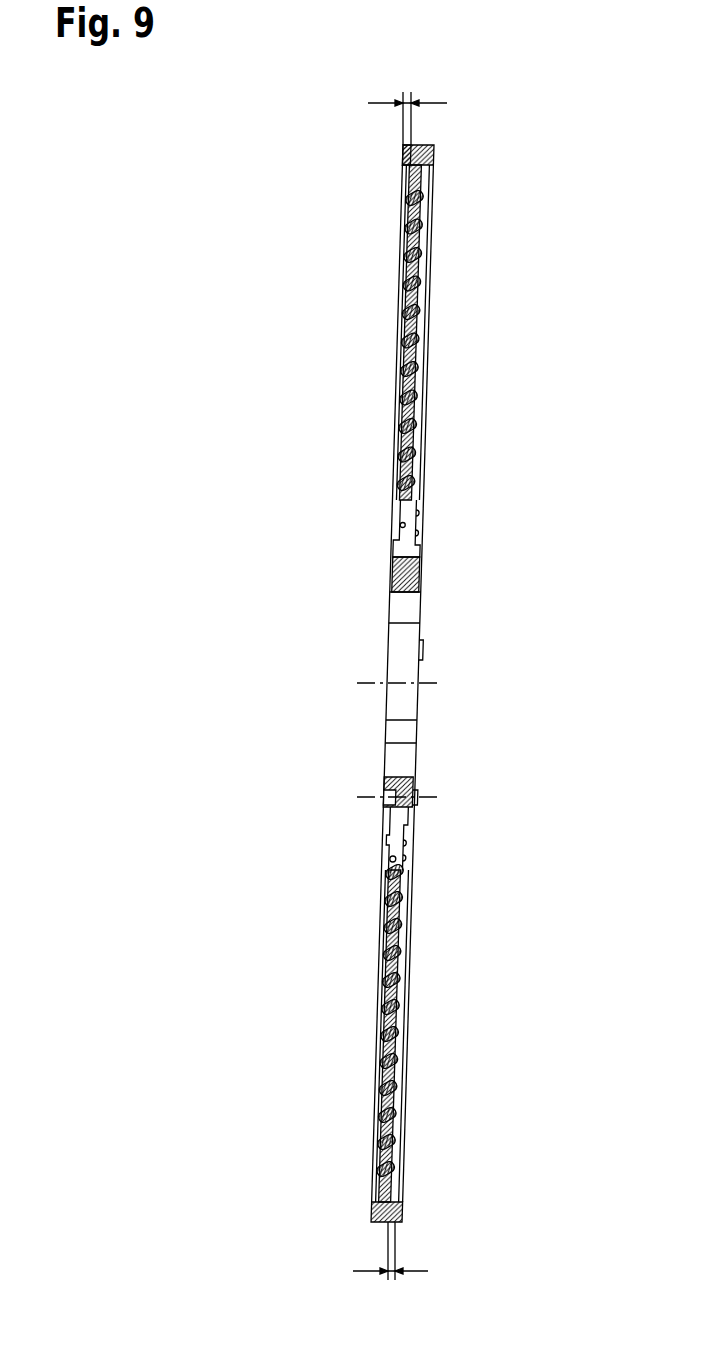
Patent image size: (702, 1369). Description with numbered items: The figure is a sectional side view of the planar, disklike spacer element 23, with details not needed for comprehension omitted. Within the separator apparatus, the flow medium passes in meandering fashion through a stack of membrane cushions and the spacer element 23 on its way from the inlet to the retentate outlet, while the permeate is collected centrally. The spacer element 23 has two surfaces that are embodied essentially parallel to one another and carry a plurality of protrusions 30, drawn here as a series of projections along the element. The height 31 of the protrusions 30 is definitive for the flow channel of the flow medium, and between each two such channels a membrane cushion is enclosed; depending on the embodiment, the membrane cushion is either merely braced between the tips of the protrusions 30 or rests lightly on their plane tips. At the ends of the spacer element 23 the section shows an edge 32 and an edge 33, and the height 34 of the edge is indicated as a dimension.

The spacer element 23 is at (452, 433).
The protrusion 30 is at (400, 251).
The height of protrusion 31 is at (388, 1280).
The edge 32 is at (433, 152).
The edge 33 is at (403, 156).
The height of edge 34 is at (405, 92).